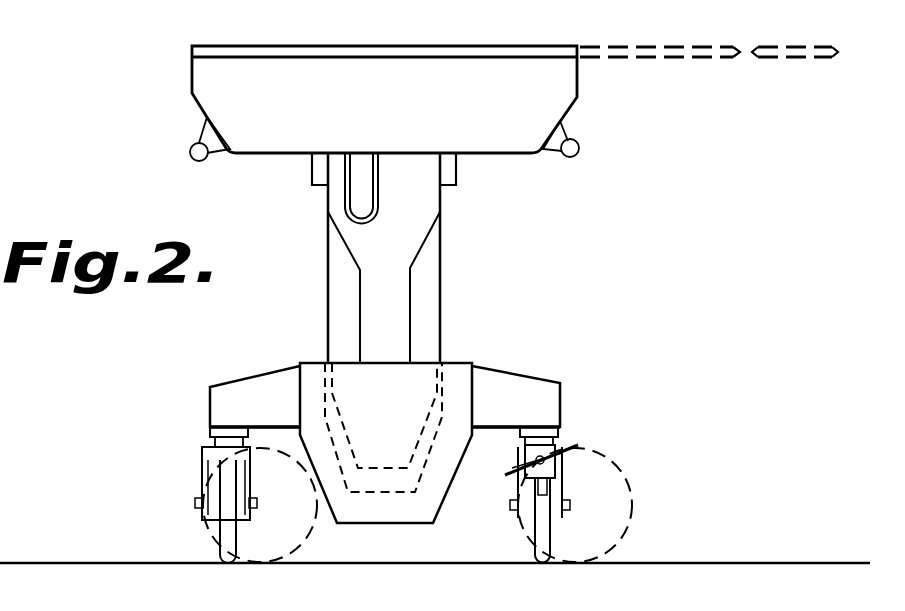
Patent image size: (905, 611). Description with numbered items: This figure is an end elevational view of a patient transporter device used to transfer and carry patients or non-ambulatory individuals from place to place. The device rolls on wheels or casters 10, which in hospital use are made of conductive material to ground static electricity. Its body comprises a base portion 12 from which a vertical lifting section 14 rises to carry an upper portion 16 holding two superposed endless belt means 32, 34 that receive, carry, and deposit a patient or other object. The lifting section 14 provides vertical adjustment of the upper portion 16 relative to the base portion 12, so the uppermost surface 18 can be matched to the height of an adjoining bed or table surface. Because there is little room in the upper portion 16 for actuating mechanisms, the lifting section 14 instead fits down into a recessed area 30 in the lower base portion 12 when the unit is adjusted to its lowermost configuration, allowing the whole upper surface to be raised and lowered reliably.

The wheels or casters 10 is at (220, 549).
The base portion 12 is at (492, 385).
The vertical lifting section 14 is at (428, 285).
The upper portion 16 is at (560, 97).
The uppermost surface 18 is at (511, 47).
The recessed area 30 is at (398, 500).
The endless belt means 32 is at (709, 92).
The endless belt means 34 is at (784, 80).